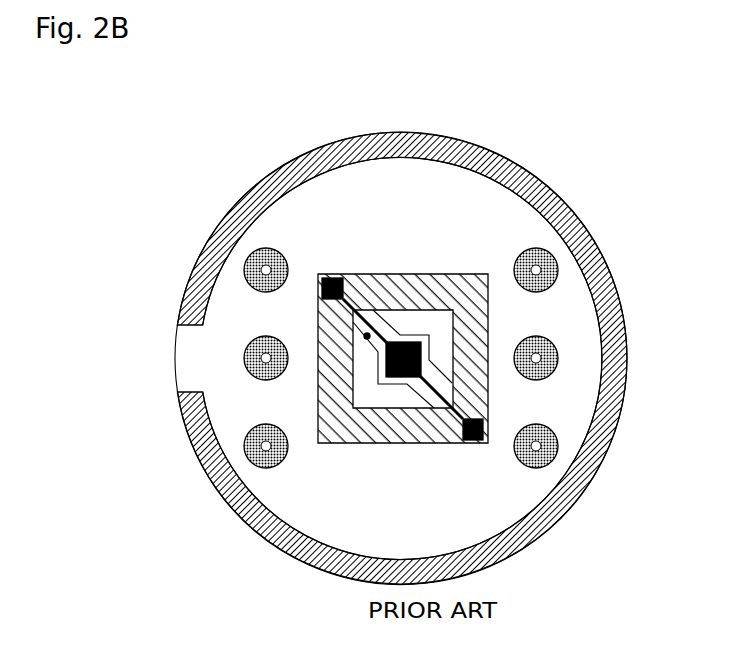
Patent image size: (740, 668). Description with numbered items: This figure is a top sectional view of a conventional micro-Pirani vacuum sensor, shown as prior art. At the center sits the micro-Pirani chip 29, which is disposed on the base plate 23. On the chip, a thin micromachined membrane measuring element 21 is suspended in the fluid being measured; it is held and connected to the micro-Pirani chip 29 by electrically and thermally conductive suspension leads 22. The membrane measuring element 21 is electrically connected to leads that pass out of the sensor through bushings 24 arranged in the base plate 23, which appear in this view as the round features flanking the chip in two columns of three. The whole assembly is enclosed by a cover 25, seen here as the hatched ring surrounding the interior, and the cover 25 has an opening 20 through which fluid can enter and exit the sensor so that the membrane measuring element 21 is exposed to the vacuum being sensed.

The opening 20 is at (188, 360).
The membrane measuring element 21 is at (422, 361).
The suspension leads 22 is at (364, 336).
The base plate 23 is at (500, 210).
The bushings 24 is at (517, 256).
The cover 25 is at (222, 229).
The micro-Pirani chip 29 is at (336, 430).